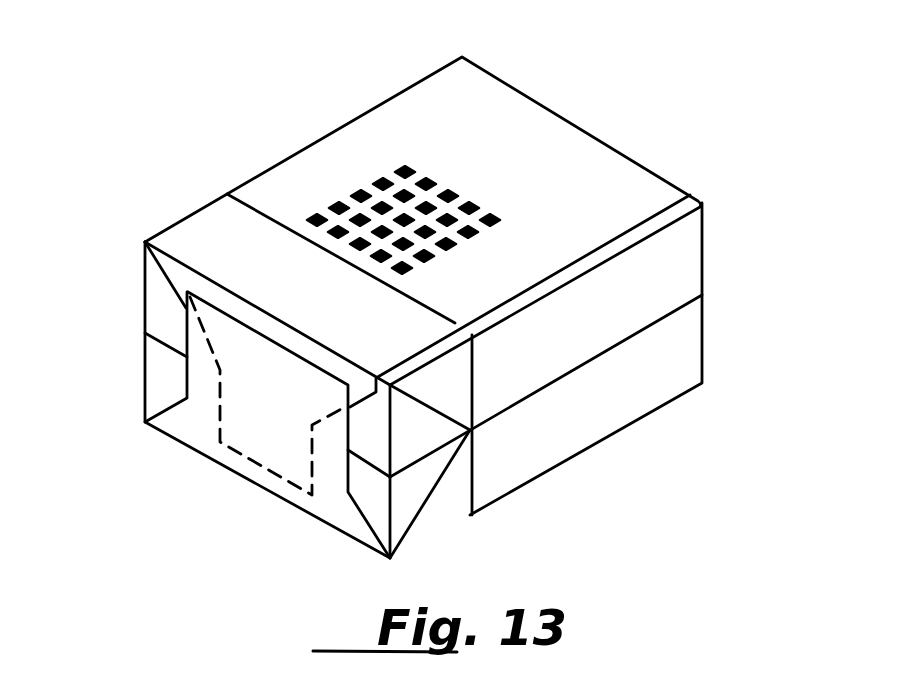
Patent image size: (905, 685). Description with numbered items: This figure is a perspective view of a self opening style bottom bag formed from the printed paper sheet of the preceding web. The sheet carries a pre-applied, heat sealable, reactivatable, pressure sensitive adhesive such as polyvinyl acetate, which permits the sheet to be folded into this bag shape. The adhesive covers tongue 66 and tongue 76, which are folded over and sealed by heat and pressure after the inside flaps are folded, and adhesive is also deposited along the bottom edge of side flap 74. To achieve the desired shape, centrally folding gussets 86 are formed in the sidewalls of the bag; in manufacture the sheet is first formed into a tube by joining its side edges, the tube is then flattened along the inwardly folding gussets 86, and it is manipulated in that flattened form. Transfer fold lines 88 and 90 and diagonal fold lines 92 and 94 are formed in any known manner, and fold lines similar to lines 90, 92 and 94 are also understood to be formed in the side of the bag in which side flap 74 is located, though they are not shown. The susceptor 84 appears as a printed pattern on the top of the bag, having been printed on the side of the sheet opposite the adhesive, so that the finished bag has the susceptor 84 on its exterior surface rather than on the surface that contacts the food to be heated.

The tongue 66 is at (252, 442).
The side flap 74 is at (163, 315).
The tongue 76 is at (287, 347).
The susceptor 84 is at (476, 193).
The centrally folding gussets 86 is at (688, 304).
The transfer fold line 88 is at (263, 213).
The transfer fold line 90 is at (473, 373).
The diagonal fold line 92 is at (428, 404).
The diagonal fold line 94 is at (430, 500).